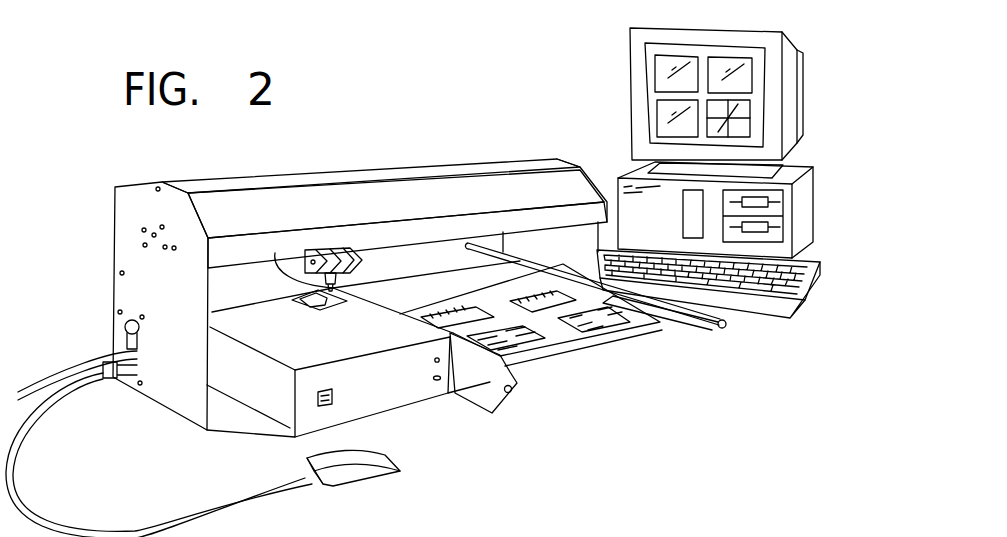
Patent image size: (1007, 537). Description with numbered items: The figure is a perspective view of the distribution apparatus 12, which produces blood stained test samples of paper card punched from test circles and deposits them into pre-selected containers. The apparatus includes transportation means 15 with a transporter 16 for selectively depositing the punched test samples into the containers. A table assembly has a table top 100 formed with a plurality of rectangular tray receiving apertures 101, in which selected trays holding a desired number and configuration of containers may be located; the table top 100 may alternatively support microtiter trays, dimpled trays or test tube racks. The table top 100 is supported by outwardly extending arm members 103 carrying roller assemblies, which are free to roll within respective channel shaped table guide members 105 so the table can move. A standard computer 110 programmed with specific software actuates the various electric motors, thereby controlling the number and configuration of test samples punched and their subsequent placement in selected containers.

The distribution apparatus 12 is at (504, 443).
The transportation means 15 is at (386, 268).
The transporter 16 is at (334, 288).
The table top 100 is at (564, 340).
The tray receiving apertures 101 is at (640, 336).
The arm members 103 is at (724, 324).
The table guide members 105 is at (725, 330).
The computer 110 is at (805, 213).